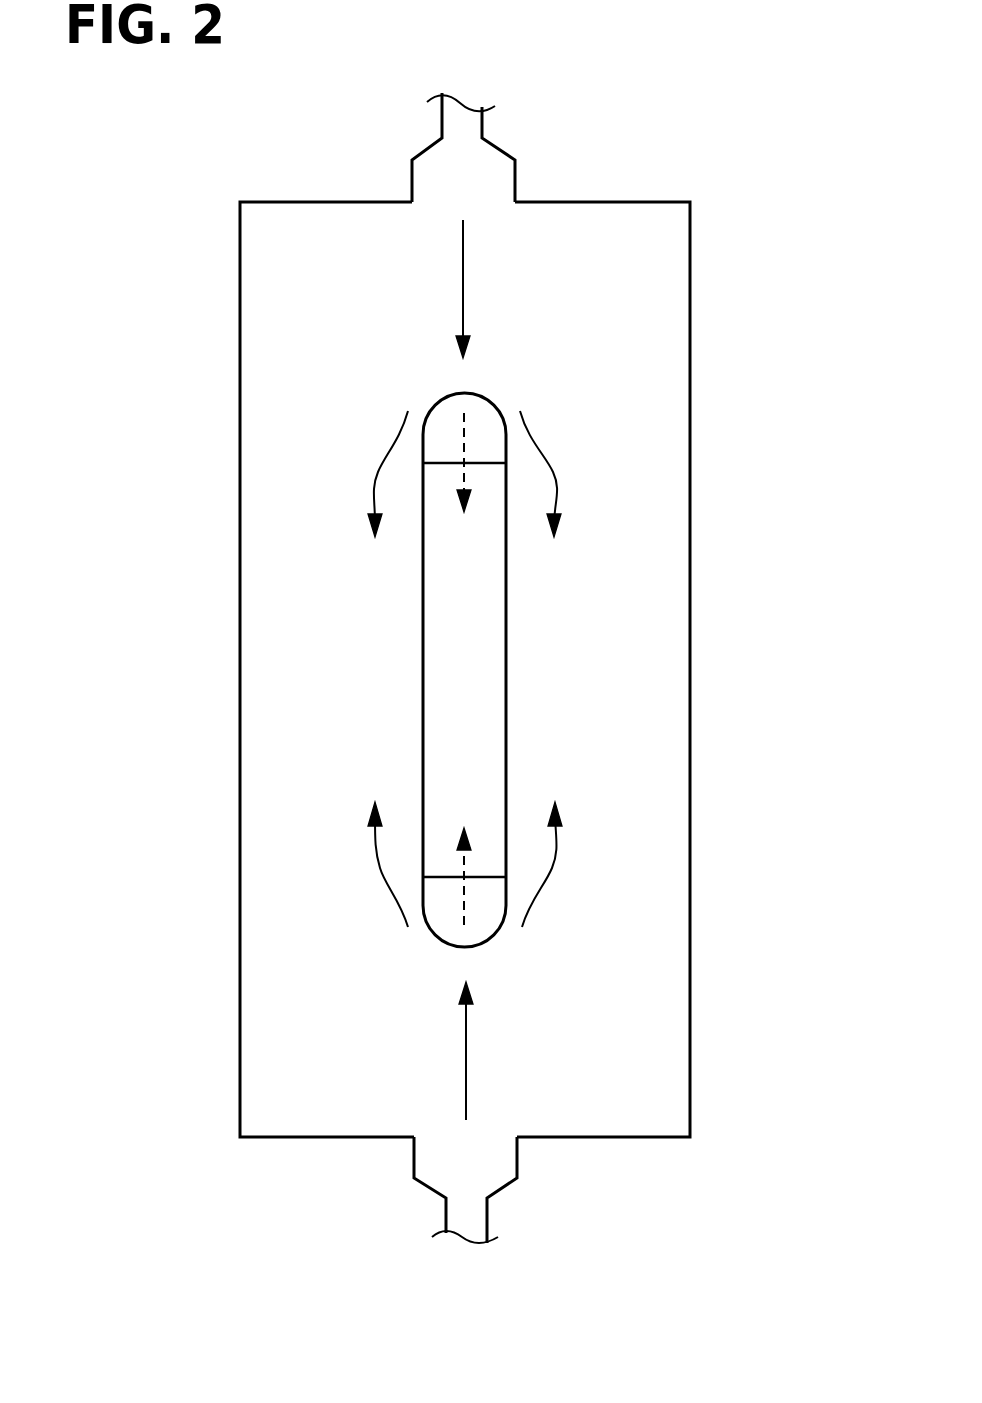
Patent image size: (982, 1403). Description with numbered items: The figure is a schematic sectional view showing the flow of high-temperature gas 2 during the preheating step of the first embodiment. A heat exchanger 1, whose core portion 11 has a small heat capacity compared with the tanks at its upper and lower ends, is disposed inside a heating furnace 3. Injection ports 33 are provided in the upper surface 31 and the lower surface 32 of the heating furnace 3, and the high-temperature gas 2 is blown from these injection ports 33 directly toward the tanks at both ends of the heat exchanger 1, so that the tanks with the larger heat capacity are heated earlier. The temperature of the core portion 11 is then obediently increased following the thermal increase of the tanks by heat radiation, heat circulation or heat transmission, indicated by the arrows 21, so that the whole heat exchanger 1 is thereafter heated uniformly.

The heat exchanger 1 is at (558, 624).
The core portion 11 is at (450, 664).
The high-temperature gas 2 is at (462, 291).
The heat radiation, heat circulation or heat transmission 21 is at (375, 476).
The heating furnace 3 is at (690, 342).
The upper surface 31 is at (558, 205).
The lower surface 32 is at (573, 1137).
The injection port 33 is at (475, 168).